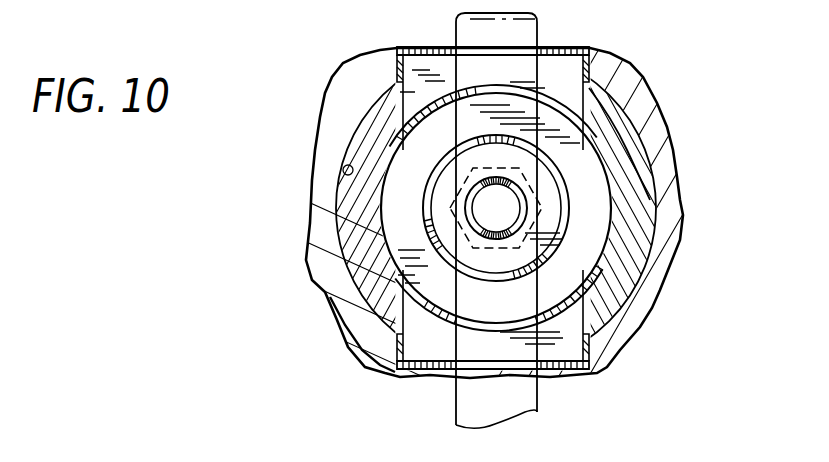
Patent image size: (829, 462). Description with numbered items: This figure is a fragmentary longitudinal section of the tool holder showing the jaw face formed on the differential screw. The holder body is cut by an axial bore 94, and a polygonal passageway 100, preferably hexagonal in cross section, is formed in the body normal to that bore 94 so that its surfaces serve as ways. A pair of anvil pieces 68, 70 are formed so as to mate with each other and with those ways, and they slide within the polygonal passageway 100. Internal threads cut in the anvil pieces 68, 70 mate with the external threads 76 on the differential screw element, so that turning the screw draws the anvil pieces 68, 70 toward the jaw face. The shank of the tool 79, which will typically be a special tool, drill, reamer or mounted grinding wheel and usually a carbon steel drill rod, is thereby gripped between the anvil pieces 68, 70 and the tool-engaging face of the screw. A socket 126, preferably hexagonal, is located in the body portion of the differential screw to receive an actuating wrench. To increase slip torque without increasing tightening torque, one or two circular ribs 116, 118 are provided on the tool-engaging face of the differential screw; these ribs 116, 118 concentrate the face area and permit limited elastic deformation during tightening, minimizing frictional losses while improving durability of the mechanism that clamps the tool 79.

The tool 79 is at (548, 27).
The polygonal passageway 100 is at (345, 160).
The socket 126 is at (527, 172).
The circular rib 116 is at (506, 243).
The circular rib 118 is at (512, 282).
The anvil piece 68 is at (360, 250).
The anvil piece 70 is at (623, 237).
The external threads 76 is at (405, 340).
The axial bore 94 is at (410, 372).